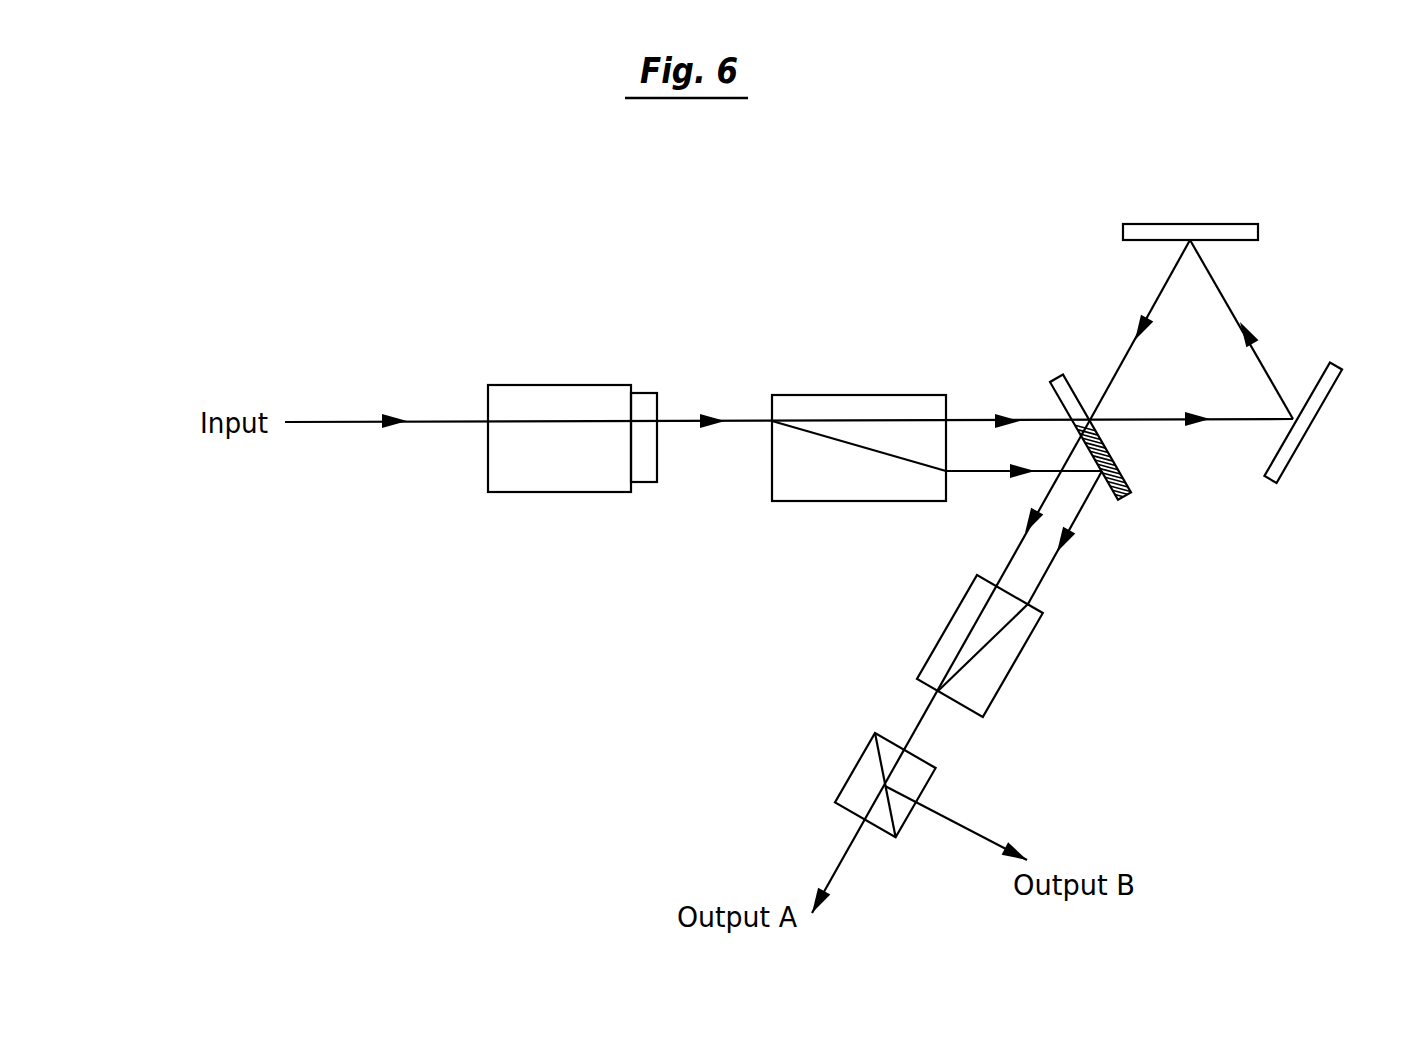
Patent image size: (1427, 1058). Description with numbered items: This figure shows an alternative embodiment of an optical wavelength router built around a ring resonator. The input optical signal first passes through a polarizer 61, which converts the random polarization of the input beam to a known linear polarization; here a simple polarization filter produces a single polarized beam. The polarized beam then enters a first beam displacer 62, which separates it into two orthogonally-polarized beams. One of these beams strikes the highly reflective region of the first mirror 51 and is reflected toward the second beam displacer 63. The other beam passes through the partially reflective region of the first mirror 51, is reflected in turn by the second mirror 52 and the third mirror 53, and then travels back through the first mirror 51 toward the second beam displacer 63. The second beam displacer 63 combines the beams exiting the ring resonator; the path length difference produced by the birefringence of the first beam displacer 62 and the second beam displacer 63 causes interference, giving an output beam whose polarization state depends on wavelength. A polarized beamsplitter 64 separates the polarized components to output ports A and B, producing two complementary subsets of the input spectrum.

The first mirror 51 is at (1060, 381).
The second mirror 52 is at (1298, 438).
The third mirror 53 is at (1207, 226).
The polarizer 61 is at (629, 332).
The first beam displacer 62 is at (857, 395).
The second beam displacer 63 is at (1037, 632).
The polarized beamsplitter 64 is at (850, 782).